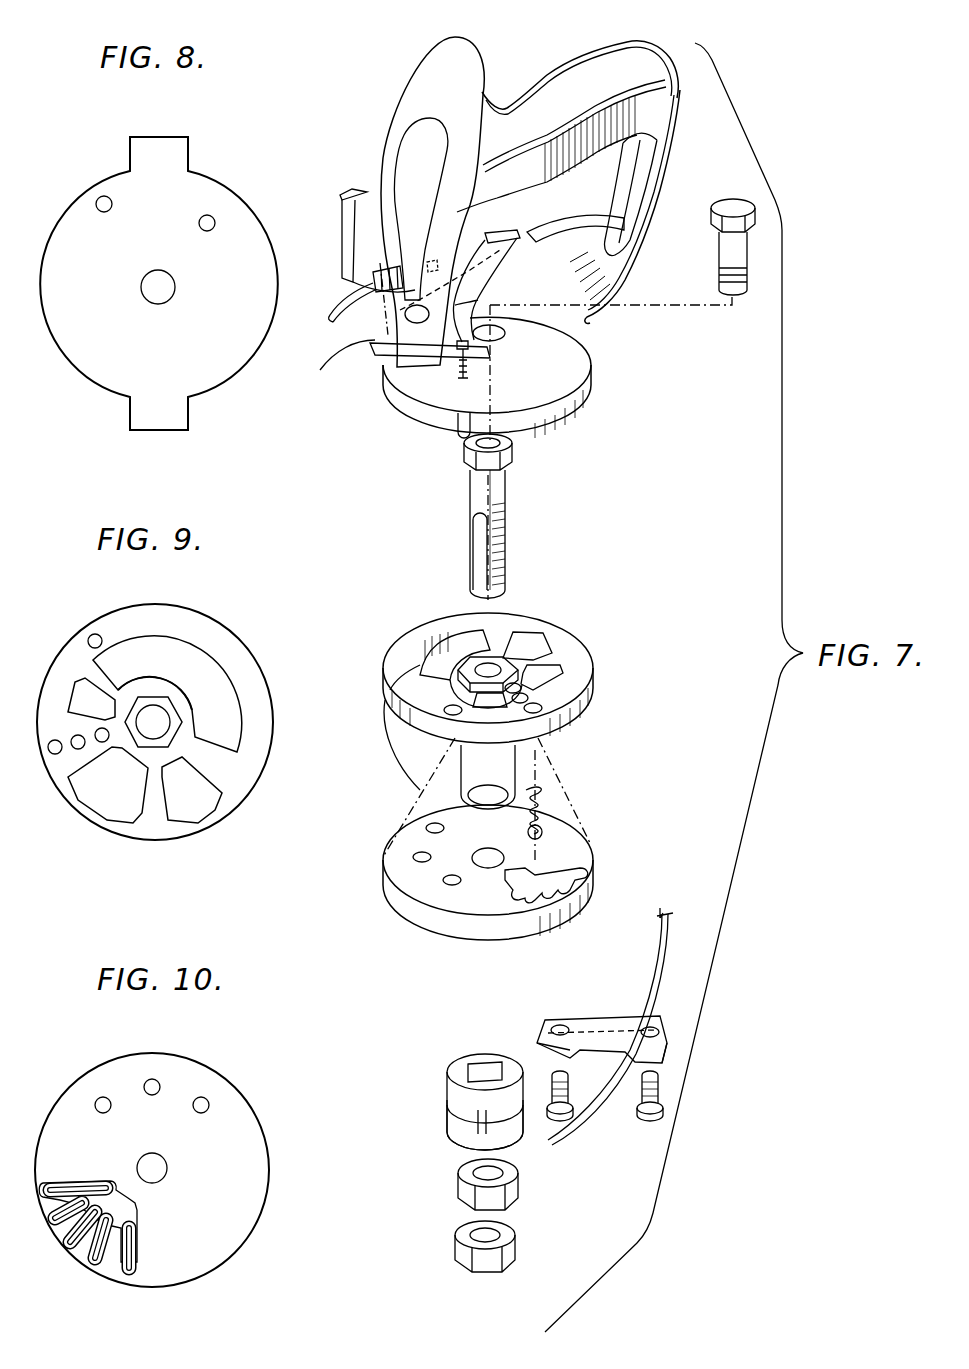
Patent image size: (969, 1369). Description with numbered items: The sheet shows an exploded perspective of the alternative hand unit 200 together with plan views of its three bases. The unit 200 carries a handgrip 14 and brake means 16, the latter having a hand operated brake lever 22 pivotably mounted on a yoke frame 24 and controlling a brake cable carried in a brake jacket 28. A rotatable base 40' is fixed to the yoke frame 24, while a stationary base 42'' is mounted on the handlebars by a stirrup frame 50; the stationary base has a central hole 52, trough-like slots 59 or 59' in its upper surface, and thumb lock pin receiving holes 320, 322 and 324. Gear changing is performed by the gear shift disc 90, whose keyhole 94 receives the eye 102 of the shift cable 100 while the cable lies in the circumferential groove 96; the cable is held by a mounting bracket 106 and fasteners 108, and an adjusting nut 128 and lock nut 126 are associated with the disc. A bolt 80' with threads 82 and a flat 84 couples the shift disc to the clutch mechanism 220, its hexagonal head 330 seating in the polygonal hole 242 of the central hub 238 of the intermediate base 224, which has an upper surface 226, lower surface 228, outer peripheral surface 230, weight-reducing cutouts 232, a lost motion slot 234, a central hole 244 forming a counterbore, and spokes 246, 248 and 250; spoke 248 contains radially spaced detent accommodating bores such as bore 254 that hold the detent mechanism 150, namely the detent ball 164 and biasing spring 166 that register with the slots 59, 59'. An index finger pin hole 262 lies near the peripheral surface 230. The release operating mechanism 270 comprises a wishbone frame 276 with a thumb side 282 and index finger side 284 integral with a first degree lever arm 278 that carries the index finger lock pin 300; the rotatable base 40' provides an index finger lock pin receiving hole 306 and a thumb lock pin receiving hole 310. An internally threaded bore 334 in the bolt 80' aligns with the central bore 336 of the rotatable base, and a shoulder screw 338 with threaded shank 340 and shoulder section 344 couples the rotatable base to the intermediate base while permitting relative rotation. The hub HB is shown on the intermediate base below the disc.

In FIG. 7, the handgrip 14 is at (630, 70).
In FIG. 7, the brake means 16 is at (338, 335).
In FIG. 7, the brake lever 22 is at (524, 228).
In FIG. 7, the yoke frame 24 is at (666, 190).
In FIG. 7, the brake jacket 28 is at (330, 306).
In FIG. 8, the rotatable base 40' is at (154, 283).
In FIG. 7, the rotatable base 40' is at (514, 377).
In FIG. 7, the stirrup frame 50 is at (575, 790).
In FIG. 10, the central hole 52 is at (163, 1172).
In FIG. 7, the central hole 52 is at (486, 850).
In FIG. 10, the slots 59 is at (136, 1279).
In FIG. 10, the slots 59' is at (88, 1201).
In FIG. 7, the slots 59' is at (546, 868).
In FIG. 7, the bolt 80' is at (523, 534).
In FIG. 7, the threads 82 is at (505, 545).
In FIG. 7, the flat 84 is at (472, 528).
In FIG. 7, the gear shift disc 90 is at (450, 1130).
In FIG. 7, the keyhole 94 is at (476, 1128).
In FIG. 7, the circumferential groove 96 is at (455, 1100).
In FIG. 7, the shift cable 100 is at (664, 953).
In FIG. 7, the eye 102 is at (560, 1143).
In FIG. 7, the mounting bracket 106 is at (575, 1022).
In FIG. 7, the fasteners 108 is at (652, 1122).
In FIG. 7, the lock nut 126 is at (458, 1262).
In FIG. 7, the adjusting nut 128 is at (458, 1200).
In FIG. 7, the detent mechanism 150 is at (540, 775).
In FIG. 7, the detent ball 164 is at (545, 830).
In FIG. 7, the biasing spring 166 is at (545, 800).
In FIG. 7, the hand unit 200 is at (372, 398).
In FIG. 7, the clutch mechanism 220 is at (350, 186).
In FIG. 9, the intermediate base 224 is at (266, 670).
In FIG. 7, the intermediate base 224 is at (590, 658).
In FIG. 7, the upper surface 226 is at (572, 652).
In FIG. 7, the lower surface 228 is at (430, 692).
In FIG. 7, the outer peripheral surface 230 is at (395, 715).
In FIG. 9, the cutouts 232 is at (175, 800).
In FIG. 7, the cutouts 232 is at (530, 645).
In FIG. 9, the lost motion slot 234 is at (190, 665).
In FIG. 7, the lost motion slot 234 is at (412, 650).
In FIG. 9, the central hub 238 is at (190, 683).
In FIG. 7, the central hub 238 is at (520, 640).
In FIG. 9, the polygonal hole 242 is at (180, 728).
In FIG. 7, the polygonal hole 242 is at (482, 660).
In FIG. 9, the central hole 244 is at (155, 712).
In FIG. 7, the central hole 244 is at (510, 655).
In FIG. 7, the spoke 246 is at (560, 655).
In FIG. 9, the spoke 248 is at (82, 725).
In FIG. 7, the spoke 248 is at (540, 688).
In FIG. 7, the spoke 250 is at (460, 705).
In FIG. 9, the detent accommodating bore 254 is at (55, 756).
In FIG. 7, the detent accommodating bore 254 is at (545, 708).
In FIG. 9, the index finger pin hole 262 is at (90, 634).
In FIG. 7, the index finger pin hole 262 is at (450, 715).
In FIG. 7, the operating mechanism 270 is at (512, 222).
In FIG. 7, the wishbone frame 276 is at (340, 272).
In FIG. 7, the lever arm 278 is at (500, 357).
In FIG. 7, the thumb side 282 is at (518, 278).
In FIG. 7, the index finger side 284 is at (340, 203).
In FIG. 7, the index finger lock pin 300 is at (455, 428).
In FIG. 8, the index finger lock pin receiving hole 306 is at (100, 196).
In FIG. 8, the thumb lock pin receiving hole 310 is at (208, 215).
In FIG. 10, the thumb lock pin receiving hole 320 is at (204, 1097).
In FIG. 7, the thumb lock pin receiving hole 320 is at (388, 843).
In FIG. 10, the thumb lock pin receiving hole 322 is at (156, 1080).
In FIG. 7, the thumb lock pin receiving hole 322 is at (413, 860).
In FIG. 10, the thumb lock pin receiving hole 324 is at (99, 1096).
In FIG. 7, the thumb lock pin receiving hole 324 is at (450, 888).
In FIG. 7, the hexagonal head 330 is at (514, 452).
In FIG. 7, the internally threaded bore 334 is at (500, 438).
In FIG. 8, the bore 336 is at (175, 288).
In FIG. 7, the bore 336 is at (506, 333).
In FIG. 7, the shoulder screw 338 is at (760, 242).
In FIG. 7, the threaded shank 340 is at (748, 278).
In FIG. 7, the shoulder section 344 is at (722, 247).
In FIG. 7, the hub HB is at (440, 790).